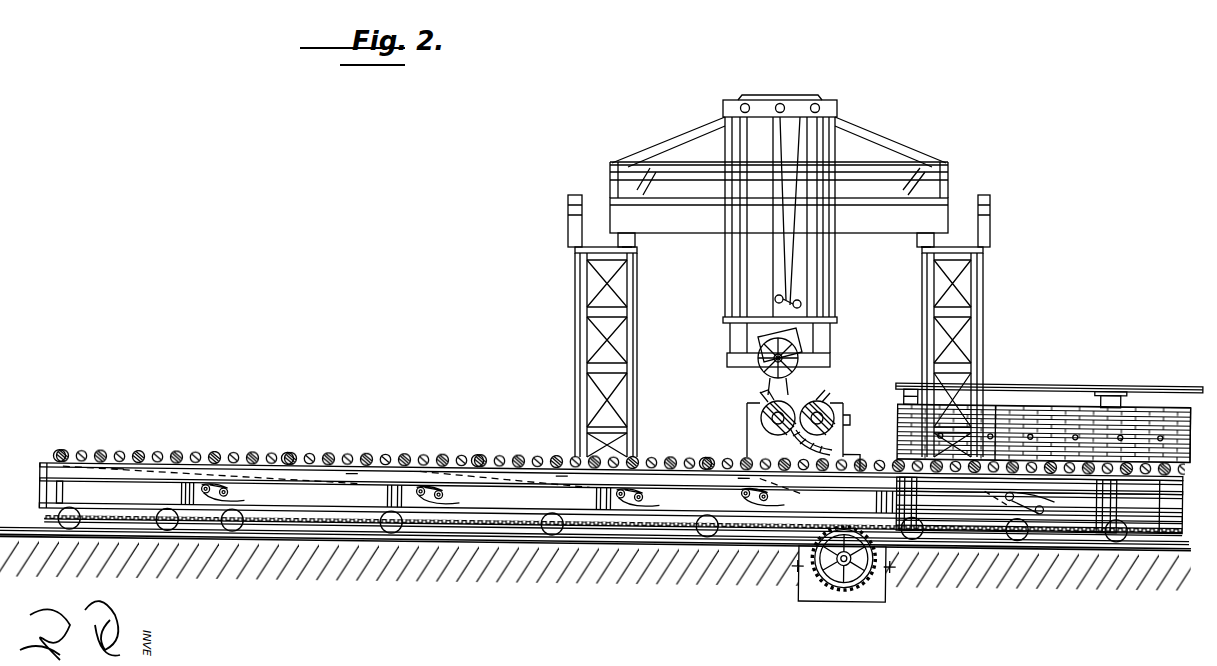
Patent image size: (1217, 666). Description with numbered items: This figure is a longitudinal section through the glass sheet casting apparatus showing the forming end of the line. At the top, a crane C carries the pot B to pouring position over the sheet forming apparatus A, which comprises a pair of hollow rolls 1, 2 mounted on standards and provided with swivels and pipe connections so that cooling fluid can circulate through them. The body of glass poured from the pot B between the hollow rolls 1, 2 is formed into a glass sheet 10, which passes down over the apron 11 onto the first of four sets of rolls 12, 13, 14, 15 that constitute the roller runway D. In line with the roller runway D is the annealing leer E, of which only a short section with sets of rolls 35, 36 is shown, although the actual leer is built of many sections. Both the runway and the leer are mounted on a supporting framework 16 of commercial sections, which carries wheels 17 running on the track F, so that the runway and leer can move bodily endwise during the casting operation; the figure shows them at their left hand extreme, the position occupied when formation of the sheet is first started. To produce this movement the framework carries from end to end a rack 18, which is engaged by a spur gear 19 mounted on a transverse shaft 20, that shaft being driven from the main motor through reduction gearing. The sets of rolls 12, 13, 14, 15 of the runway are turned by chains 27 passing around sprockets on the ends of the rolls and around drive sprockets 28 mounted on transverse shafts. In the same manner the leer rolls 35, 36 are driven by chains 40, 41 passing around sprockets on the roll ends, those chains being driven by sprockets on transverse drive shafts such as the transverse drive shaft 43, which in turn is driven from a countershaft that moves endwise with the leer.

The hollow roll 1 is at (762, 400).
The hollow roll 2 is at (828, 400).
The glass sheet 10 is at (855, 444).
The apron 11 is at (751, 438).
The set of rolls 12 is at (706, 440).
The set of rolls 13 is at (493, 441).
The set of rolls 14 is at (287, 441).
The set of rolls 15 is at (55, 441).
The supporting framework 16 is at (44, 500).
The wheels 17 is at (80, 528).
The rack 18 is at (290, 536).
The spur gear 19 is at (872, 560).
The transverse shaft 20 is at (845, 562).
The chains 27 is at (118, 468).
The drive sprockets 28 is at (245, 492).
The set of rolls 35 is at (1007, 432).
The set of rolls 36 is at (1150, 435).
The chain 40 is at (1160, 458).
The chain 41 is at (990, 472).
The transverse drive shaft 43 is at (1060, 488).
The sheet forming apparatus A is at (745, 412).
The pot B is at (760, 345).
The crane C is at (665, 215).
The roller runway D is at (204, 440).
The annealing leer E is at (1075, 415).
The track F is at (168, 530).